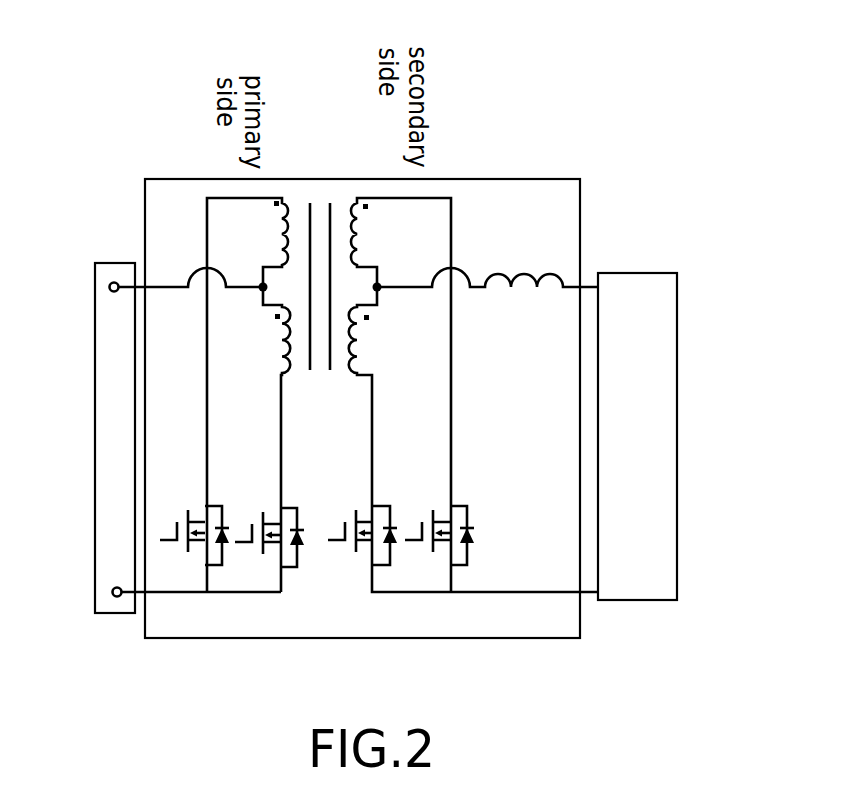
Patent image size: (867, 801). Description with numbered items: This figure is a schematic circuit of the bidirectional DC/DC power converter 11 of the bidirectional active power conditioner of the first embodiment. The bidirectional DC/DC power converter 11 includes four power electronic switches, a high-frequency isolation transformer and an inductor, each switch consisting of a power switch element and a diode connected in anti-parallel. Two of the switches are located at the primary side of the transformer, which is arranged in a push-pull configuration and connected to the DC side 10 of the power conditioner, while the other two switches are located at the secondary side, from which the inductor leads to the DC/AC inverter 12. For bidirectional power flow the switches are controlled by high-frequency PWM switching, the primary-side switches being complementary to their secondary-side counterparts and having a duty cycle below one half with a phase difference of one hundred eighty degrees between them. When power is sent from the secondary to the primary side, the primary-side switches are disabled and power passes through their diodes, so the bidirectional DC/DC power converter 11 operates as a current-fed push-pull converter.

The DC side 10 is at (110, 578).
The bidirectional DC/DC power converter 11 is at (480, 632).
The DC/AC inverter 12 is at (677, 437).